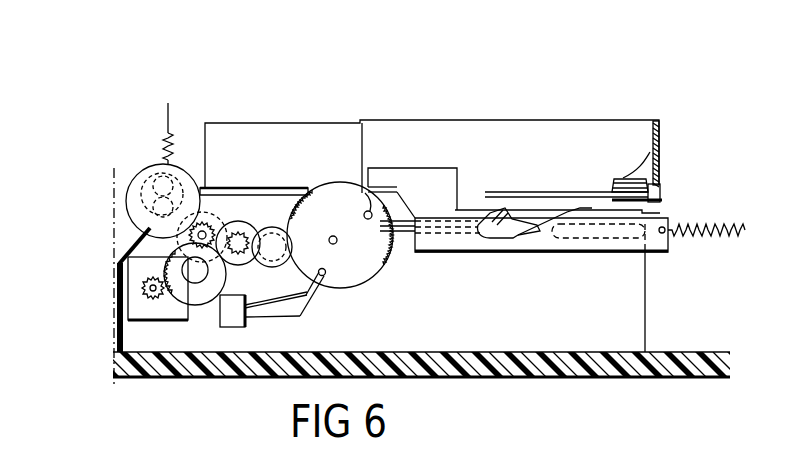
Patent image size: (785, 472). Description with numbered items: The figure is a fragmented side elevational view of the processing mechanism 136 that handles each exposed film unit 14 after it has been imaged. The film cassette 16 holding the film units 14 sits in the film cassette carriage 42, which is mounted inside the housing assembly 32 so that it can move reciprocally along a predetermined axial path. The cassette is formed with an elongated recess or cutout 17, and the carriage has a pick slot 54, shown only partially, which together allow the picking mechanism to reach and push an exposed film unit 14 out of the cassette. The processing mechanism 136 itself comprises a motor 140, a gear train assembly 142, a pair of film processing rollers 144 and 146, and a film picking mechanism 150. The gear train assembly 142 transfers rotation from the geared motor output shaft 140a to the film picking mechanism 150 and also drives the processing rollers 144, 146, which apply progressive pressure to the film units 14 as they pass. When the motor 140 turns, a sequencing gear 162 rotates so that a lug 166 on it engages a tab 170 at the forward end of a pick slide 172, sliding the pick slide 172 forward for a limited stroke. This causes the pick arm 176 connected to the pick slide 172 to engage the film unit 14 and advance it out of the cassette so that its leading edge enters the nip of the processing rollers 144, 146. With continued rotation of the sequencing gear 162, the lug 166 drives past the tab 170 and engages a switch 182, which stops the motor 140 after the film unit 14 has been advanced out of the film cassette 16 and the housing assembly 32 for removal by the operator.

The processing mechanism 136 is at (271, 88).
The housing assembly 32 is at (538, 386).
The film cassette 16 is at (334, 124).
The film cassette carriage 42 is at (518, 132).
The elongated recess or cutout 17 is at (660, 190).
The pick slot 54 is at (660, 194).
The film unit 14 is at (618, 168).
The gear train assembly 142 is at (263, 162).
The film processing roller 144 is at (176, 172).
The film processing roller 146 is at (161, 189).
The motor 140 is at (133, 312).
The geared motor output shaft 140a is at (143, 284).
The lug 166 is at (340, 235).
The tab 170 is at (364, 212).
The sequencing gear 162 is at (350, 277).
The switch 182 is at (233, 325).
The pick slide 172 is at (393, 176).
The film picking mechanism 150 is at (493, 266).
The pick arm 176 is at (541, 210).